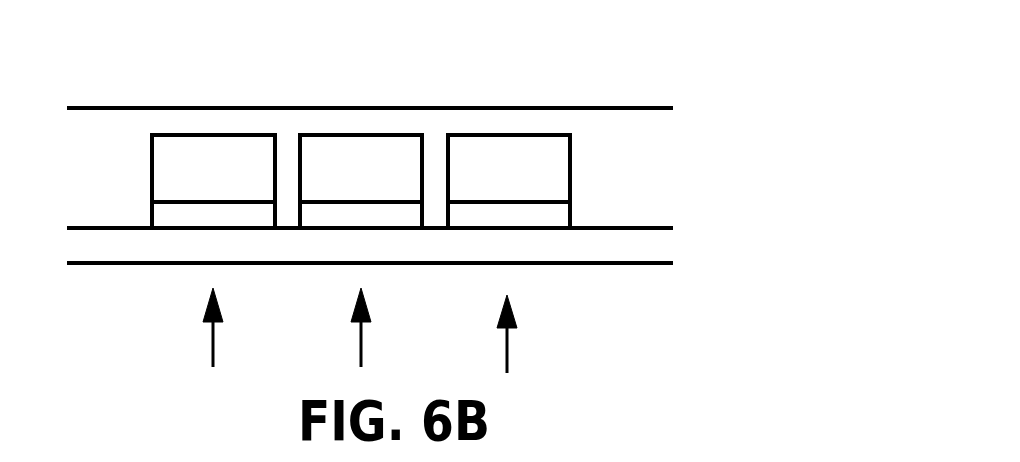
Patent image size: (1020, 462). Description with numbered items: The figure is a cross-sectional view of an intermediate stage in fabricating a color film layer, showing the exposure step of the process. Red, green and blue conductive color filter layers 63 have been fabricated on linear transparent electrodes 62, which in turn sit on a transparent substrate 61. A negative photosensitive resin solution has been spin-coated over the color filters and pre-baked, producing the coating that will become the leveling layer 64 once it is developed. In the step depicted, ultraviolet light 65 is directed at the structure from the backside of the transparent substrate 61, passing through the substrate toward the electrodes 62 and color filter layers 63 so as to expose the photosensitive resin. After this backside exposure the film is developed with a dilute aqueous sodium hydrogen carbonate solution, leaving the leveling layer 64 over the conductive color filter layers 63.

The transparent substrate 61 is at (533, 252).
The linear transparent electrodes 62 is at (552, 216).
The conductive color filter layers 63 is at (557, 172).
The leveling layer 64 is at (442, 125).
The ultraviolet light 65 is at (212, 331).